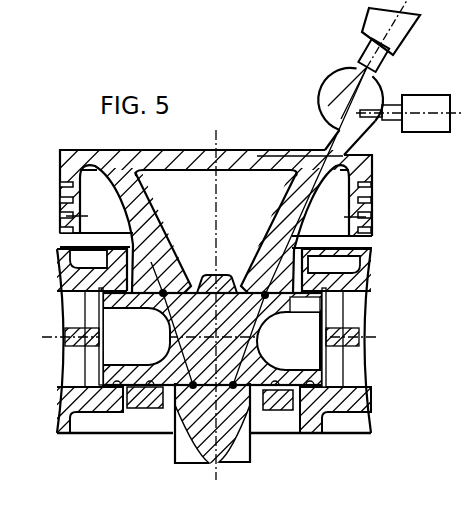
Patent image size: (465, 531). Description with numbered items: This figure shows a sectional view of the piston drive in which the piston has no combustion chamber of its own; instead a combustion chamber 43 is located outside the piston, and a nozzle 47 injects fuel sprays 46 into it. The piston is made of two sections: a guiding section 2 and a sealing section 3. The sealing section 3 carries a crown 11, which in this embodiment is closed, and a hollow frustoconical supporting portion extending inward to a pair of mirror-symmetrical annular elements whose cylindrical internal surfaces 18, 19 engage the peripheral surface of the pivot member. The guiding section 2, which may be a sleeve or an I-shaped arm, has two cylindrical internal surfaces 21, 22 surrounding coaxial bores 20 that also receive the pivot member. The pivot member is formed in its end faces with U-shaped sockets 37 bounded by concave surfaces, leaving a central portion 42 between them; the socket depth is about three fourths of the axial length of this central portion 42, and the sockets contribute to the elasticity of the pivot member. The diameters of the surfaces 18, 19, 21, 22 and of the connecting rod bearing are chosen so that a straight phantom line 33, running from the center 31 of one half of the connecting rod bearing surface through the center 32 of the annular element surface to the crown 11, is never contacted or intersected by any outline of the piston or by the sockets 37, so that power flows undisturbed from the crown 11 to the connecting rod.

The guiding section 2 is at (367, 343).
The sealing section 3 is at (52, 192).
The crown 11 is at (204, 149).
The cylindrical internal surface 18 is at (158, 410).
The cylindrical internal surface 19 is at (300, 301).
The coaxial bores 20 is at (96, 414).
The cylindrical internal surface 21 is at (123, 413).
The cylindrical internal surface 22 is at (312, 412).
The center 31 is at (190, 462).
The center 32 is at (168, 288).
The straight line 33 is at (274, 228).
The sockets 37 is at (299, 366).
The central portion 42 is at (238, 333).
The combustion chamber 43 is at (320, 120).
The fuel sprays 46 is at (334, 87).
The nozzle 47 is at (424, 96).